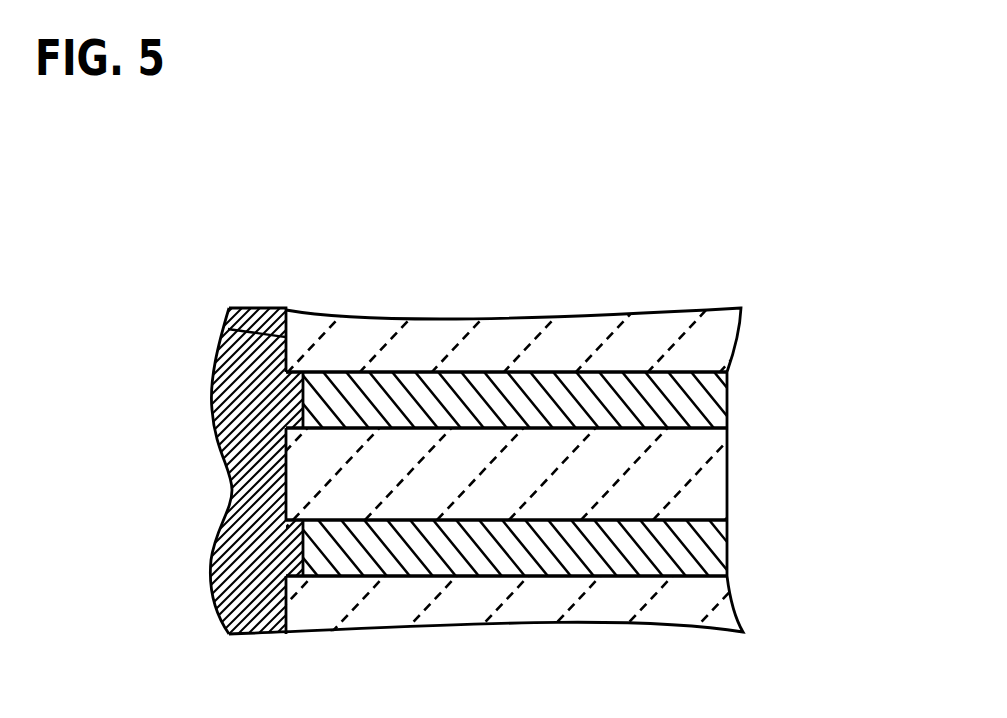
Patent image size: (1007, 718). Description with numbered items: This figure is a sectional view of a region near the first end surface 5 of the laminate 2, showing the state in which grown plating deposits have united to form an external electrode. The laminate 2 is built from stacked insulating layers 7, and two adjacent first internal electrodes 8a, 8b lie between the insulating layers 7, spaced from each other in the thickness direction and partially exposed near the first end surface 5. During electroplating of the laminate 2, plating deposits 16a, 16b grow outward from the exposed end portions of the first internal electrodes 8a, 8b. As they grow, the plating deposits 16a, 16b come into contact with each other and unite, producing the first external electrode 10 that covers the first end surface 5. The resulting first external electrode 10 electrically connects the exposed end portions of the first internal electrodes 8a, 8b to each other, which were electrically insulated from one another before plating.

The laminate 2 is at (658, 296).
The first end surface 5 is at (228, 329).
The insulating layers 7 is at (613, 502).
The first internal electrode 8a is at (720, 402).
The first internal electrode 8b is at (713, 545).
The first external electrode 10 is at (213, 602).
The plating deposit 16a is at (273, 405).
The plating deposit 16b is at (270, 543).